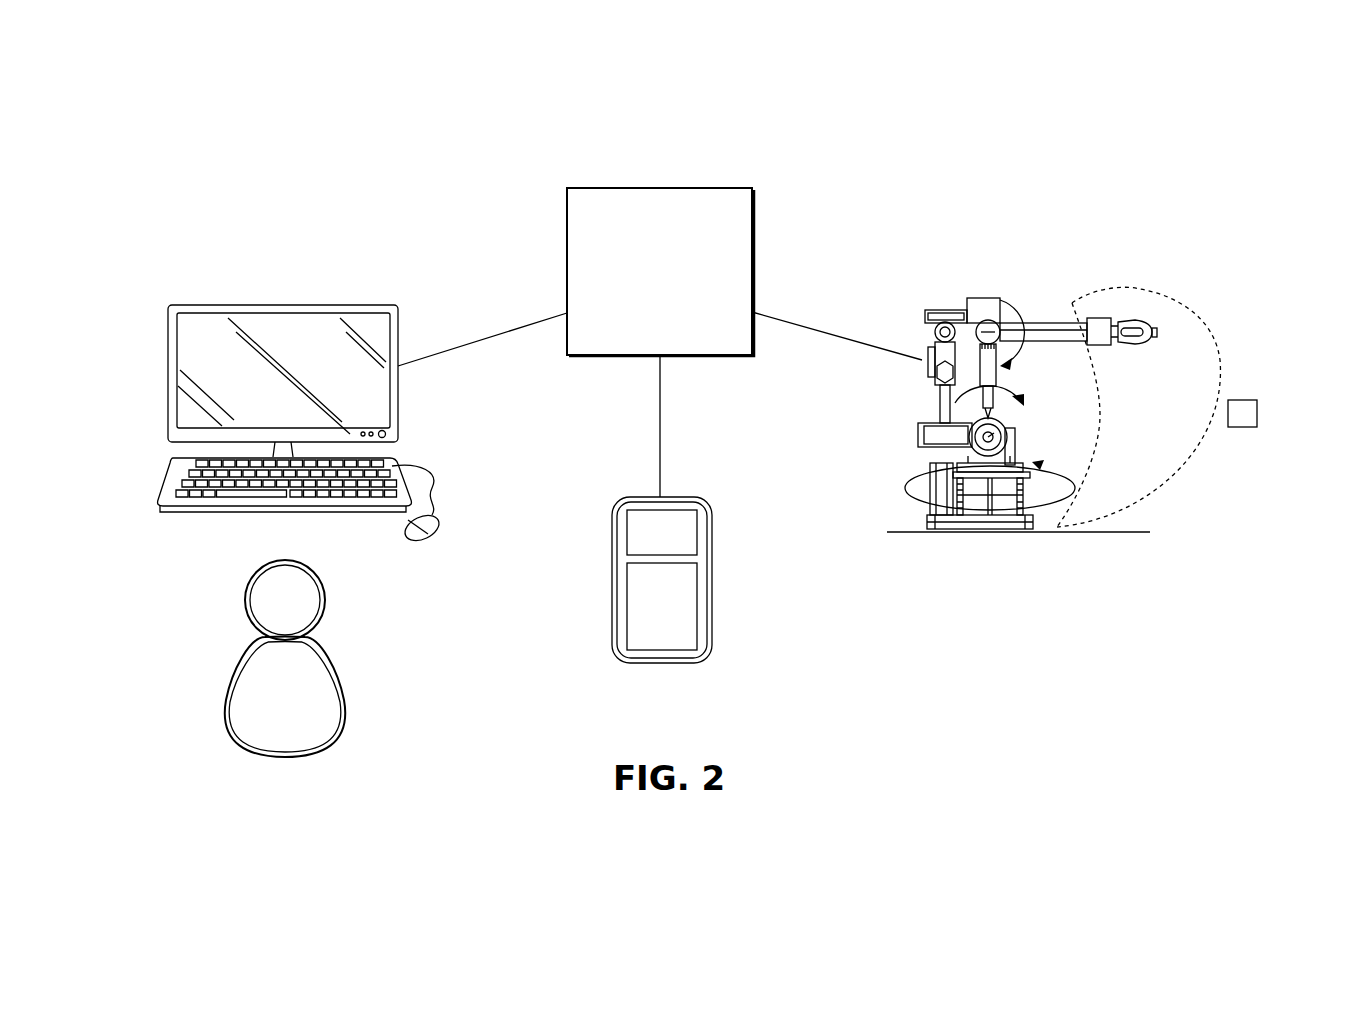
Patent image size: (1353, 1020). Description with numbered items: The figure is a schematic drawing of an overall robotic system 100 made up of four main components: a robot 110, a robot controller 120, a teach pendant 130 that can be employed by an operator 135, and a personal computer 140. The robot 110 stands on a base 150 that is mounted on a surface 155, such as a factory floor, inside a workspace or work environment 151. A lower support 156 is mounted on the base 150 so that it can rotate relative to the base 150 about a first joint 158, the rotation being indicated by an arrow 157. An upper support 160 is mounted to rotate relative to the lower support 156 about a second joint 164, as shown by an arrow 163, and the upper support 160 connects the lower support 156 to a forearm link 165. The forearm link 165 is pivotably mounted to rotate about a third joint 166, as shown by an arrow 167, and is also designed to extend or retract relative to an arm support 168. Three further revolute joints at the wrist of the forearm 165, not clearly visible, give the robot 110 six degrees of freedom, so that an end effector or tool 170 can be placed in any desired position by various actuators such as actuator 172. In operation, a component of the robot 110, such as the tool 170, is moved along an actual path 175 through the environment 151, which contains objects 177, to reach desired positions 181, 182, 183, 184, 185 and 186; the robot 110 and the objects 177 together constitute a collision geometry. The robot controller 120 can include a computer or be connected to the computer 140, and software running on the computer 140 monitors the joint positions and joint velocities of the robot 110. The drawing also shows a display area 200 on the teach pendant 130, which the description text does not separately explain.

The robotic system 100 is at (873, 148).
The robot 110 is at (983, 290).
The robot controller 120 is at (567, 262).
The teach pendant 130 is at (612, 598).
The operator 135 is at (253, 757).
The personal computer 140 is at (168, 378).
The base 150 is at (922, 512).
The work environment 151 is at (1172, 235).
The surface 155 is at (902, 532).
The lower support 156 is at (925, 463).
The arrow 157 is at (1040, 516).
The first joint 158 is at (977, 532).
The upper support 160 is at (918, 432).
The arrow 163 is at (1040, 397).
The second joint 164 is at (997, 438).
The forearm link 165 is at (1032, 323).
The third joint 166 is at (993, 320).
The arrow 167 is at (1003, 300).
The arm support 168 is at (967, 310).
The tool 170 is at (1157, 333).
The actuator 172 is at (928, 357).
The actual path 175 is at (1200, 450).
The object 177 is at (1257, 413).
The desired position 181 is at (1072, 303).
The desired position 182 is at (1180, 301).
The desired position 183 is at (1223, 367).
The desired position 184 is at (1175, 485).
The desired position 185 is at (1058, 528).
The desired position 186 is at (1083, 363).
The display screen 200 is at (690, 633).